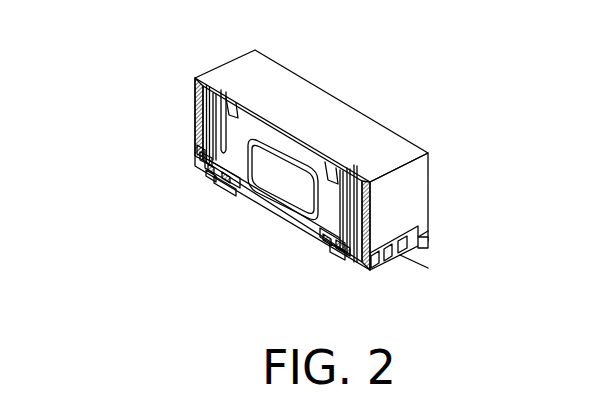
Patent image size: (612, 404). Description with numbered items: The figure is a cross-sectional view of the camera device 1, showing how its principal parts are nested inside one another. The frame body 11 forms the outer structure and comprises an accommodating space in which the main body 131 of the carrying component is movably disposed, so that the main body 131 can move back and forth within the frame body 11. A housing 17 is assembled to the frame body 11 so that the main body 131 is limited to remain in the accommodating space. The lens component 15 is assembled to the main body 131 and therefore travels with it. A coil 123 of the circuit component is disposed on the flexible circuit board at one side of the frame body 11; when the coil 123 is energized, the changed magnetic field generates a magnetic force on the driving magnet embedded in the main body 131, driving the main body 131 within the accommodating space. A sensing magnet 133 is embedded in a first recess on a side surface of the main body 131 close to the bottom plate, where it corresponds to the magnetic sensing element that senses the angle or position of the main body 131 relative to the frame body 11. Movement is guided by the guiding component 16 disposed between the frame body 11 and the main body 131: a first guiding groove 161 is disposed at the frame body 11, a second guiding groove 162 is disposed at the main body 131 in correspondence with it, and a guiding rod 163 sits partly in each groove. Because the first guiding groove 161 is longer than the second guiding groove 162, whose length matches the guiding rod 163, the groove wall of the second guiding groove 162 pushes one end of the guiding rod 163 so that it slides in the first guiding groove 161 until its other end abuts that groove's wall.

The camera device 1 is at (575, 116).
The frame body 11 is at (242, 195).
The lens component 15 is at (281, 186).
The guiding component 16 is at (118, 112).
The housing 17 is at (230, 77).
The coil 123 is at (198, 90).
The main body 131 is at (246, 116).
The sensing magnet 133 is at (326, 249).
The first guiding groove 161 is at (210, 179).
The second guiding groove 162 is at (200, 150).
The guiding rod 163 is at (212, 176).